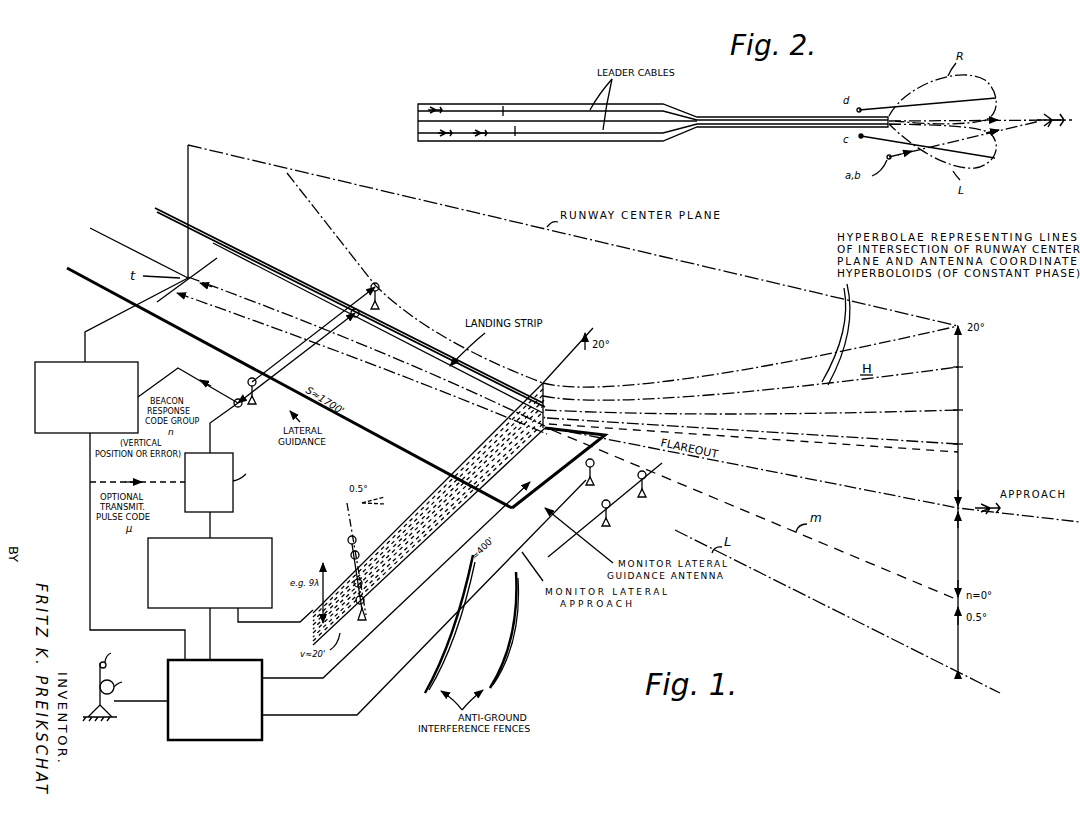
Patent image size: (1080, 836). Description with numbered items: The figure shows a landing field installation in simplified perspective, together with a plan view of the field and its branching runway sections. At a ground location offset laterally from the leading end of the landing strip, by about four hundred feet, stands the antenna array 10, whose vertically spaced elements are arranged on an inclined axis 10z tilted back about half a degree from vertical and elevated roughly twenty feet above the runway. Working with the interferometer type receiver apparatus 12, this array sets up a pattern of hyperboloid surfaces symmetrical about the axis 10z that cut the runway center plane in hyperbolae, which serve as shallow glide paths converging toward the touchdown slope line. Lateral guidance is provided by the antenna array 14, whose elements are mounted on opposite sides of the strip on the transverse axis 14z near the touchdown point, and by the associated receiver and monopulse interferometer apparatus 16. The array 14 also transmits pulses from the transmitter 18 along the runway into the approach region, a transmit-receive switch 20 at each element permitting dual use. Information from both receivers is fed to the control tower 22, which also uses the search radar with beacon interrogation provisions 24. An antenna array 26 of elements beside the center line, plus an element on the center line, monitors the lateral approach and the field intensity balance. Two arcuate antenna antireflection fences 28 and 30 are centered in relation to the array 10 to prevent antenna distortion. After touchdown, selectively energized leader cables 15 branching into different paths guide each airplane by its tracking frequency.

In FIG. 1, the antenna array 10 is at (340, 541).
In FIG. 1, the inclined axis of the array 10z is at (346, 508).
In FIG. 1, the interferometer type receiver apparatus 12 is at (244, 538).
In FIG. 1, the antenna array 14 is at (380, 298).
In FIG. 1, the axis of array 14 14z is at (396, 266).
In FIG. 2, the leader cables 15 is at (515, 130).
In FIG. 1, the receiver and monopulse interferometer apparatus 16 is at (35, 378).
In FIG. 1, the transmitter 18 is at (229, 453).
In FIG. 1, the transmit-receive switch 20 is at (358, 318).
In FIG. 1, the control tower 22 is at (200, 741).
In FIG. 1, the search radar with beacon interrogation provisions 24 is at (90, 677).
In FIG. 1, the antenna array 26 is at (642, 497).
In FIG. 1, the antenna antireflection fence 28 is at (449, 668).
In FIG. 1, the antenna antireflection fence 30 is at (510, 663).